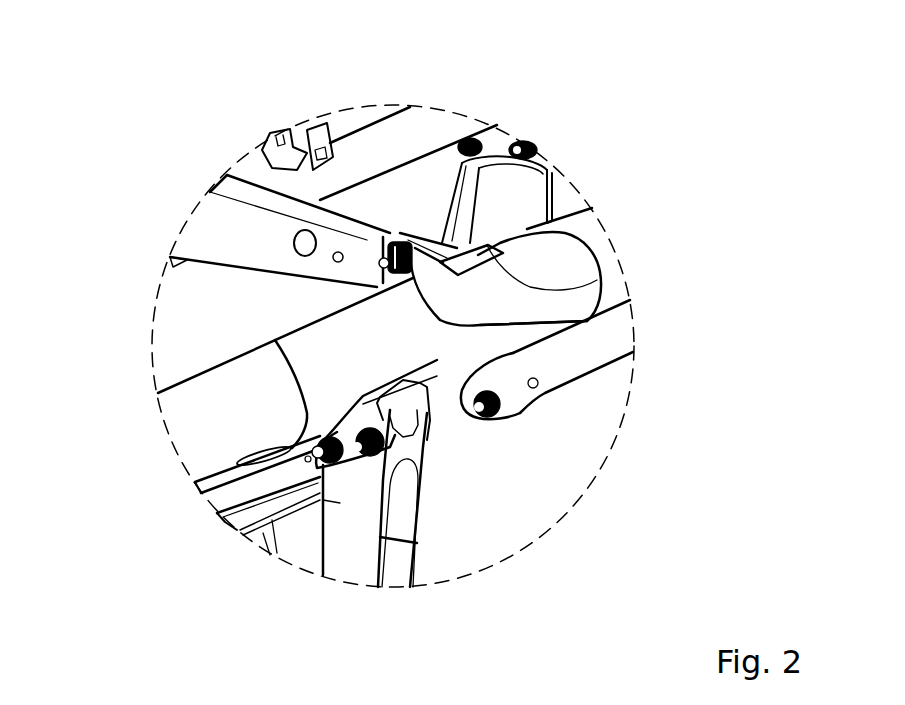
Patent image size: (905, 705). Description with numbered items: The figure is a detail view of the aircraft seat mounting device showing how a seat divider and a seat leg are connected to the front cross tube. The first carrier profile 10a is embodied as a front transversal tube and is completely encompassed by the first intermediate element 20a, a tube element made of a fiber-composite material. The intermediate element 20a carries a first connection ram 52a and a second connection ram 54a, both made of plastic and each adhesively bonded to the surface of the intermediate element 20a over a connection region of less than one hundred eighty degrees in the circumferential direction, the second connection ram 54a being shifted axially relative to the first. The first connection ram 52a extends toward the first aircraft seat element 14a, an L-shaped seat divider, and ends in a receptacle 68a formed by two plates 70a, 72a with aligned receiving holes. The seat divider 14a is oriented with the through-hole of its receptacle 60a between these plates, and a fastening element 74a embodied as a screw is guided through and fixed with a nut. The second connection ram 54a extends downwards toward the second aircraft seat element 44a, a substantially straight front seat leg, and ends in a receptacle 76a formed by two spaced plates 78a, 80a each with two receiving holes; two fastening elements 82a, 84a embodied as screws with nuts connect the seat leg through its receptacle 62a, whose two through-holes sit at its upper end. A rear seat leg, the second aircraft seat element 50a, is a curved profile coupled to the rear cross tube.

The first carrier profile 10a is at (235, 422).
The first aircraft seat element 14a is at (212, 233).
The first intermediate element 20a is at (550, 253).
The second aircraft seat element 44a is at (350, 547).
The second aircraft seat element 50a is at (556, 192).
The first connection ram 52a is at (530, 287).
The second connection ram 54a is at (383, 407).
The receptacle 60a is at (396, 234).
The receptacle 62a is at (408, 455).
The receptacle 68a is at (421, 226).
The plate 70a is at (532, 324).
The plate 72a is at (440, 243).
The fastening element 74a is at (386, 240).
The receptacle 76a is at (397, 404).
The plate 78a is at (410, 412).
The plate 80a is at (253, 542).
The fastening element 82a is at (201, 541).
The fastening element 84a is at (284, 585).